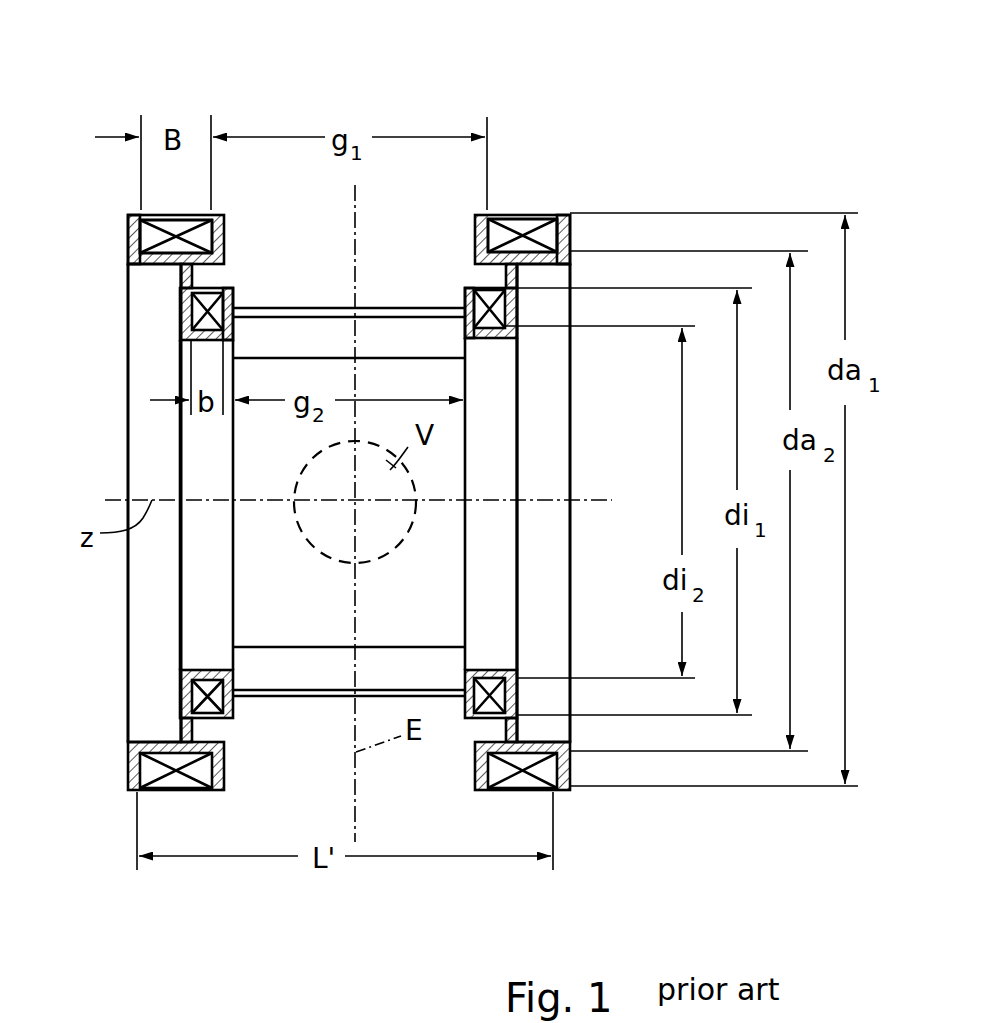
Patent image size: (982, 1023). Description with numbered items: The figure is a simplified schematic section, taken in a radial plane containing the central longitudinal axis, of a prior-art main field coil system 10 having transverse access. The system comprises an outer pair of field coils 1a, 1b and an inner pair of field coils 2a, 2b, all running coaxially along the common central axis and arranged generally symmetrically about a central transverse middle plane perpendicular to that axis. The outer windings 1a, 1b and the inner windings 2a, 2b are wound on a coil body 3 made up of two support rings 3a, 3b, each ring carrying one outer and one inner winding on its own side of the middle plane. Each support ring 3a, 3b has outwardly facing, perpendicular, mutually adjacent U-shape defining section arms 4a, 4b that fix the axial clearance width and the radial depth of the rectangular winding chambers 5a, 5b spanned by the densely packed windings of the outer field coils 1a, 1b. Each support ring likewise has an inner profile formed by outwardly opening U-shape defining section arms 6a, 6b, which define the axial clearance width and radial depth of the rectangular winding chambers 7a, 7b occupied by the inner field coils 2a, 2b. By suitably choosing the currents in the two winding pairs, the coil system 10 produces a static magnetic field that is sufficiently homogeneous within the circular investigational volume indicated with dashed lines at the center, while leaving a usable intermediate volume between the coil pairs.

The outer field coil 1a is at (183, 214).
The outer field coil 1b is at (526, 217).
The inner field coil 2a is at (180, 306).
The inner field coil 2b is at (503, 322).
The coil body 3 is at (126, 483).
The support ring 3a is at (154, 431).
The support ring 3b is at (543, 454).
The U-shape defining section arm 4a is at (126, 242).
The U-shape defining section arm 4b is at (574, 231).
The winding chamber 5a is at (198, 233).
The winding chamber 5b is at (498, 233).
The U-shape defining section arm 6a is at (238, 301).
The U-shape defining section arm 6b is at (468, 304).
The winding chamber 7a is at (205, 366).
The winding chamber 7b is at (494, 343).
The main field coil system 10 is at (454, 102).